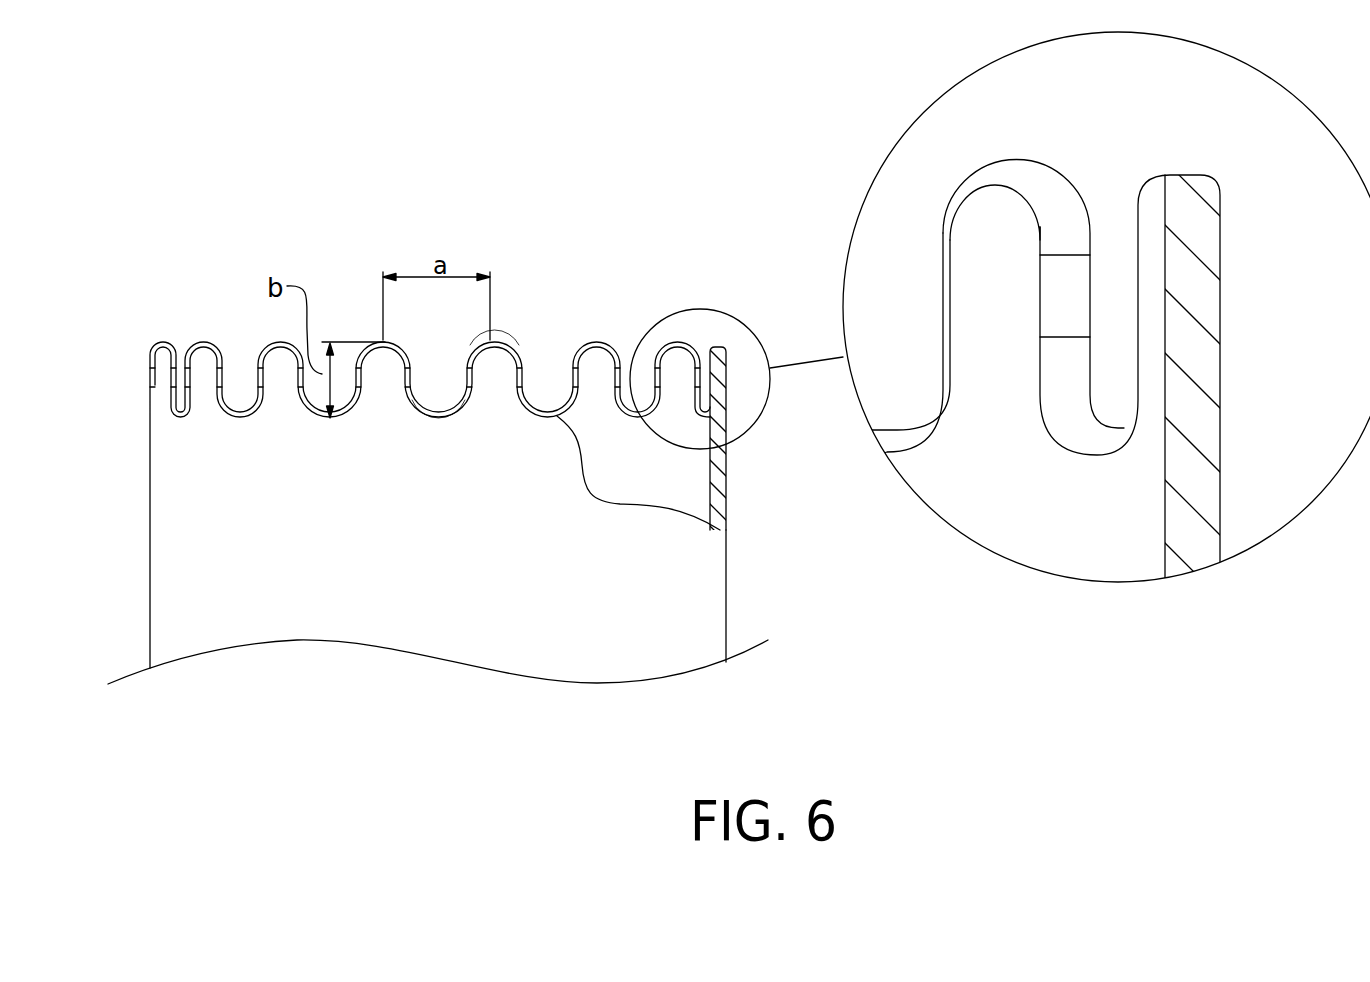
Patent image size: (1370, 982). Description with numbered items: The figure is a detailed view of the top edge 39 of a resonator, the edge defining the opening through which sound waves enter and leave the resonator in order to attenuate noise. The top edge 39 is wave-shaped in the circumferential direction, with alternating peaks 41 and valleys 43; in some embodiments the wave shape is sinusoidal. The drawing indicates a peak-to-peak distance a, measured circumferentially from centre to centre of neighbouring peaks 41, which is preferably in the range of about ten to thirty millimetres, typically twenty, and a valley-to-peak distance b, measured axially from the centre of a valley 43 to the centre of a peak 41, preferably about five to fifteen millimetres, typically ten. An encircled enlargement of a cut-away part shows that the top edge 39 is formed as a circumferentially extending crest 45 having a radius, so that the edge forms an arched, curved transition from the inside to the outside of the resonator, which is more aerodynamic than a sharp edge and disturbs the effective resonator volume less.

The top edge 39 is at (222, 348).
The peaks 41 is at (498, 341).
The valleys 43 is at (439, 407).
The crest 45 is at (1053, 202).